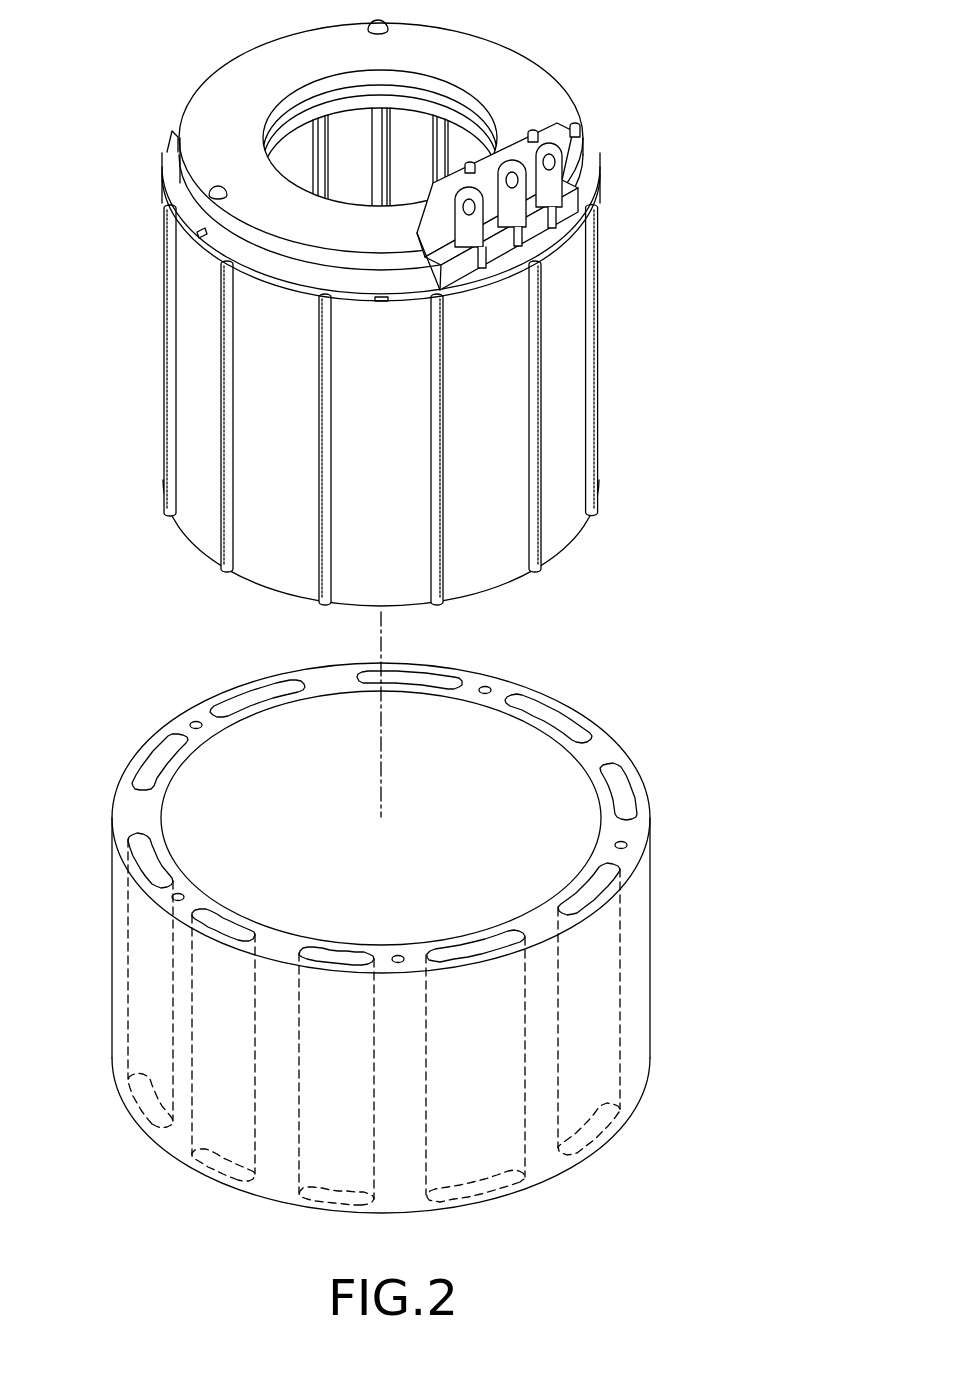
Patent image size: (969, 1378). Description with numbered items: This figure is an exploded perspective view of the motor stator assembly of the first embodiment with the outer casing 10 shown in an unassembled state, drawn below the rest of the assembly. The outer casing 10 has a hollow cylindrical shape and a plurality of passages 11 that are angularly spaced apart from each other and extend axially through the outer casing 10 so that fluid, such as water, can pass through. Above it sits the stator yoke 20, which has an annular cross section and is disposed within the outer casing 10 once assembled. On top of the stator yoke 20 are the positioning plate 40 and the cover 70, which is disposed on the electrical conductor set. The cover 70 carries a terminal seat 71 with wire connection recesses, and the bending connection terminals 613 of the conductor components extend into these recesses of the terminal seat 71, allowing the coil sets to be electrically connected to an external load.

The outer casing 10 is at (578, 1171).
The passages 11 is at (560, 726).
The stator yoke 20 is at (584, 532).
The positioning plate 40 is at (180, 182).
The cover 70 is at (548, 77).
The terminal seat 71 is at (562, 119).
The bending connection terminal 613 is at (555, 175).